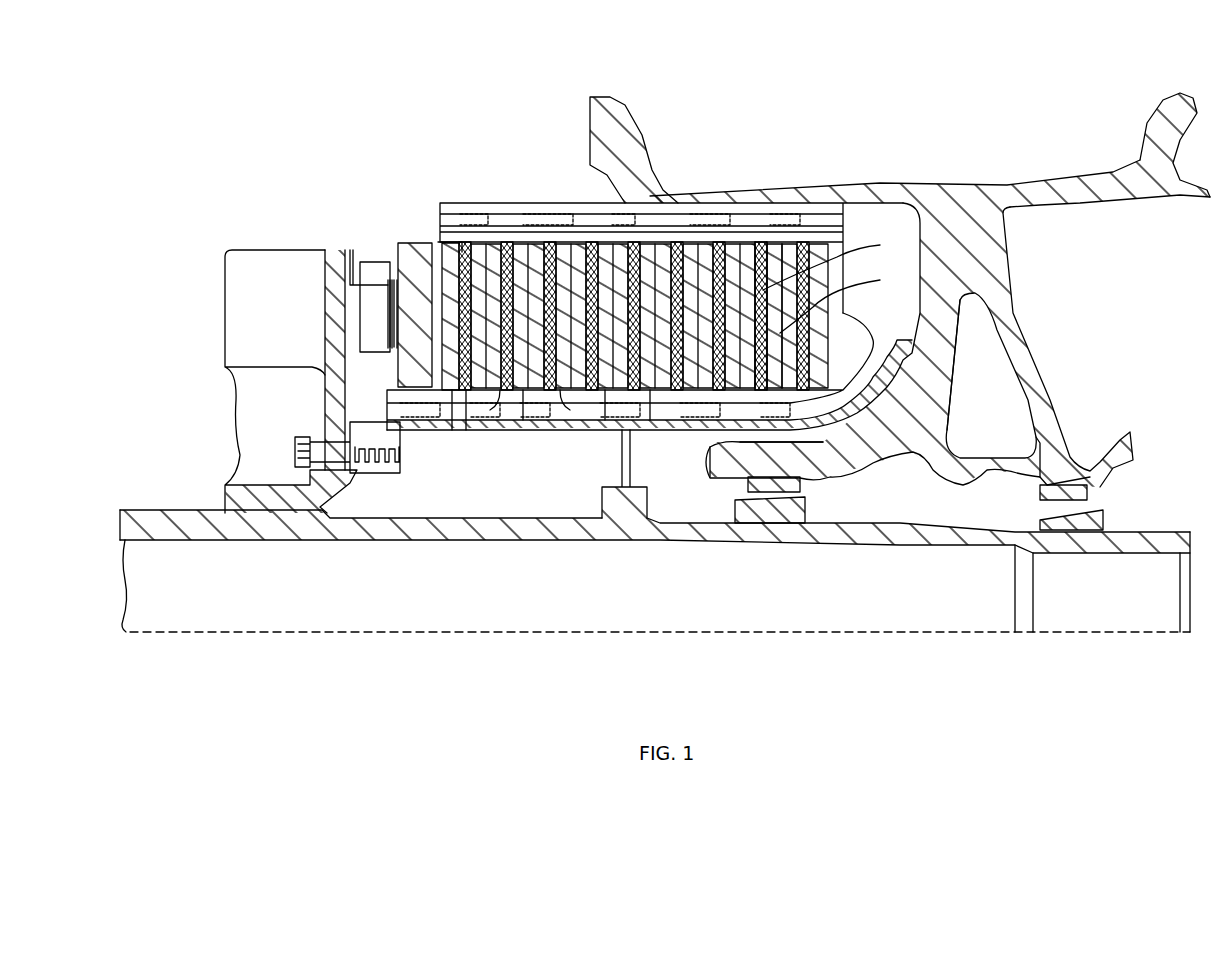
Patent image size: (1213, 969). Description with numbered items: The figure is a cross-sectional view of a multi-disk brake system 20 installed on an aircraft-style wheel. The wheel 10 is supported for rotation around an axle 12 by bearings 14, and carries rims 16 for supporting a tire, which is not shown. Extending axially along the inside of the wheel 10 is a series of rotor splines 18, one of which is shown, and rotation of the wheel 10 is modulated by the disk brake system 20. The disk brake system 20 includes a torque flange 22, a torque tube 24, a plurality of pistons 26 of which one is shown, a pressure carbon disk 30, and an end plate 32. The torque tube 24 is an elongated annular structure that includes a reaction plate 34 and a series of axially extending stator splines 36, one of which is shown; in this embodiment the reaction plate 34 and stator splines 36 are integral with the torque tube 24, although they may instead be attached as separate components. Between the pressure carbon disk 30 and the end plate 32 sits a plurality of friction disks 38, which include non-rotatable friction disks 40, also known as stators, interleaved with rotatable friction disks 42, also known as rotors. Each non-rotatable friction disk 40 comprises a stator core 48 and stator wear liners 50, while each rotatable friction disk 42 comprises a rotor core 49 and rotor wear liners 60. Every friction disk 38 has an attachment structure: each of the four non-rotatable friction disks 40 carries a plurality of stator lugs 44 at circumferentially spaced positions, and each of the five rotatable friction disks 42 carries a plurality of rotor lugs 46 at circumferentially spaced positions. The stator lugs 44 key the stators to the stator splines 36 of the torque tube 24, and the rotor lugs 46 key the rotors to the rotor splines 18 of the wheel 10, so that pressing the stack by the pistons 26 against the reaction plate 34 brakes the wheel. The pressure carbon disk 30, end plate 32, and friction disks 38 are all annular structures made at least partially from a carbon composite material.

The wheel 10 is at (1018, 160).
The axle 12 is at (931, 530).
The bearings 14 is at (787, 496).
The rims 16 is at (632, 122).
The rotor splines 18 is at (574, 193).
The multi-disk brake system 20 is at (362, 217).
The torque flange 22 is at (329, 421).
The torque tube 24 is at (499, 430).
The pistons 26 is at (373, 262).
The pressure carbon disk 30 is at (402, 245).
The end plate 32 is at (844, 197).
The reaction plate 34 is at (877, 362).
The stator splines 36 is at (553, 430).
The friction disks 38 is at (441, 236).
The non-rotatable friction disk 40 is at (782, 225).
The rotatable friction disk 42 is at (464, 240).
The stator lugs 44 is at (740, 403).
The rotor lugs 46 is at (670, 214).
The stator core 48 is at (834, 264).
The rotor core 49 is at (844, 300).
The stator wear liners 50 is at (758, 230).
The rotor wear liners 60 is at (472, 400).